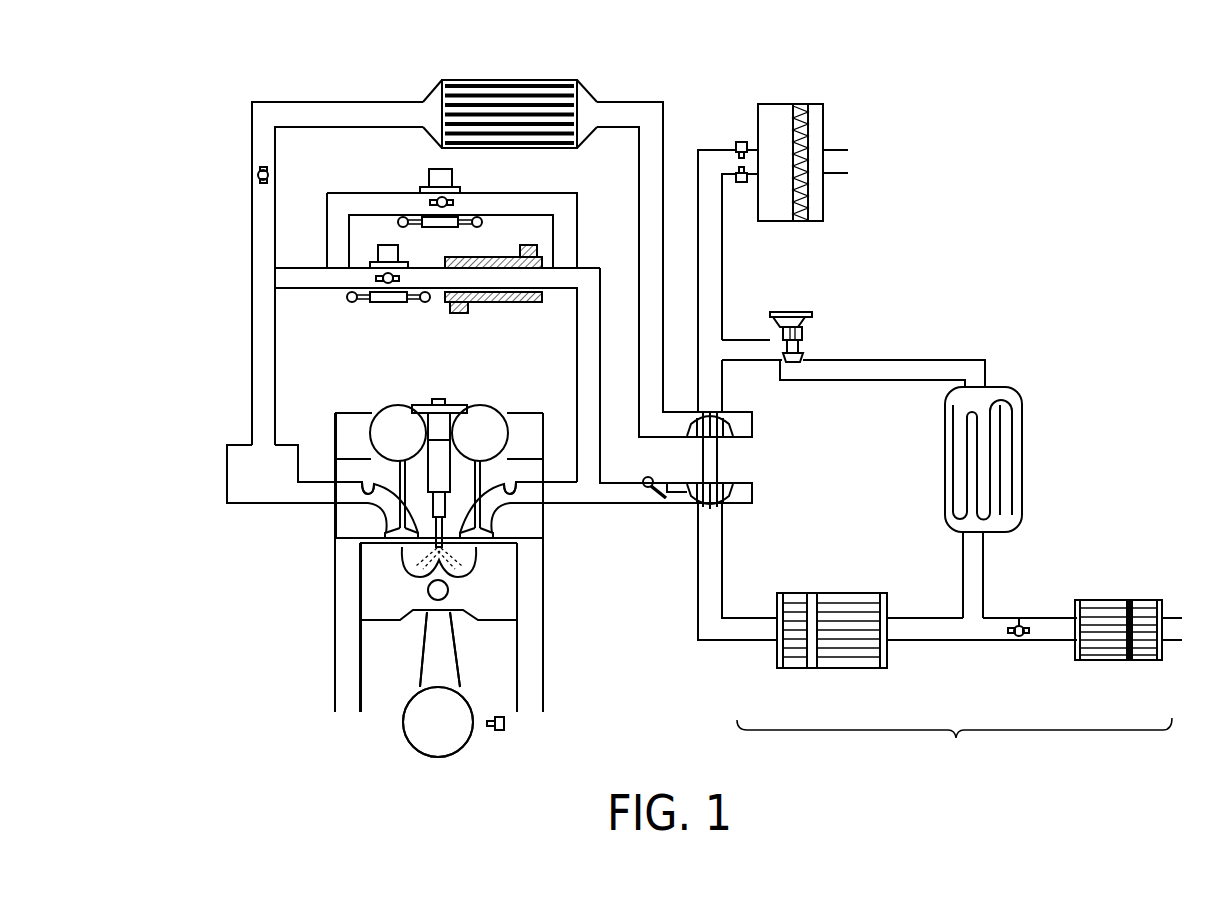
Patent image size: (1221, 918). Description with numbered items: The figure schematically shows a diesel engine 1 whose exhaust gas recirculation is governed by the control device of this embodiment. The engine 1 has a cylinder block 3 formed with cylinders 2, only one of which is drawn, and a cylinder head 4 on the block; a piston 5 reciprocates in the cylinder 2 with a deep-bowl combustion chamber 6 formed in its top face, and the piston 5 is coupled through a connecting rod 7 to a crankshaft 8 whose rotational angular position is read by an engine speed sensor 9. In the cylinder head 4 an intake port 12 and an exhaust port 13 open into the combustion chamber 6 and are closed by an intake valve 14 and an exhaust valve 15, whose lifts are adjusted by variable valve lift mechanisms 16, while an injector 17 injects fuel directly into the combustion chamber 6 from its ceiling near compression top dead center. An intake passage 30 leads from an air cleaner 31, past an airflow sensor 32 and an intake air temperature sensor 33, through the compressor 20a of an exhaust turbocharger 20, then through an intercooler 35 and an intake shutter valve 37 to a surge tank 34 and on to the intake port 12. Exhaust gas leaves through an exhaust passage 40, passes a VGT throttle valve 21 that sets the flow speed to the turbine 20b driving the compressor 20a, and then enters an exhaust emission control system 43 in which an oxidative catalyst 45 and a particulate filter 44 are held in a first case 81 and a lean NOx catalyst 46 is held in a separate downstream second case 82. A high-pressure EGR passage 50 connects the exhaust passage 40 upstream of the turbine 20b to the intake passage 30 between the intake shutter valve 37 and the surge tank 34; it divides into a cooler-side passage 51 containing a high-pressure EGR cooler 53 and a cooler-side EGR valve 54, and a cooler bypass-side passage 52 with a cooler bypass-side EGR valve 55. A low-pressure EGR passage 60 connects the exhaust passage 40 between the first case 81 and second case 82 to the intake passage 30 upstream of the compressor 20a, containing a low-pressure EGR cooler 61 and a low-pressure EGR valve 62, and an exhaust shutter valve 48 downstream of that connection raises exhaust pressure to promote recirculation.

The engine 1 is at (356, 385).
The cylinder 2 is at (512, 653).
The cylinder block 3 is at (340, 663).
The cylinder head 4 is at (335, 468).
The piston 5 is at (368, 588).
The combustion chamber 6 is at (465, 560).
The connecting rod 7 is at (425, 653).
The crankshaft 8 is at (438, 757).
The engine speed sensor 9 is at (498, 732).
The intake port 12 is at (365, 482).
The exhaust port 13 is at (508, 487).
The intake valve 14 is at (372, 504).
The exhaust valve 15 is at (493, 518).
The variable valve lift mechanism 16 is at (390, 406).
The injector 17 is at (440, 398).
The exhaust turbocharger 20 is at (747, 459).
The compressor 20a is at (725, 414).
The turbine 20b is at (733, 465).
The VGT throttle valve 21 is at (646, 478).
The intake passage 30 is at (660, 173).
The air cleaner 31 is at (800, 103).
The airflow sensor 32 is at (745, 184).
The intake air temperature sensor 33 is at (743, 140).
The surge tank 34 is at (227, 466).
The intercooler 35 is at (537, 80).
The intake shutter valve 37 is at (268, 175).
The exhaust passage 40 is at (698, 605).
The exhaust emission control system 43 is at (954, 743).
The particulate filter 44 is at (855, 652).
The oxidative catalyst 45 is at (793, 652).
The lean NOx catalyst 46 is at (1107, 647).
The exhaust shutter valve 48 is at (1019, 622).
The high-pressure EGR passage 50 is at (600, 280).
The cooler-side passage 51 is at (505, 292).
The cooler bypass-side passage 52 is at (373, 197).
The high-pressure EGR cooler 53 is at (500, 257).
The cooler-side EGR valve 54 is at (396, 278).
The cooler bypass-side EGR valve 55 is at (450, 202).
The low-pressure EGR passage 60 is at (871, 360).
The low-pressure EGR cooler 61 is at (1022, 465).
The low-pressure EGR valve 62 is at (790, 312).
The first case 81 is at (832, 634).
The second case 82 is at (1119, 636).